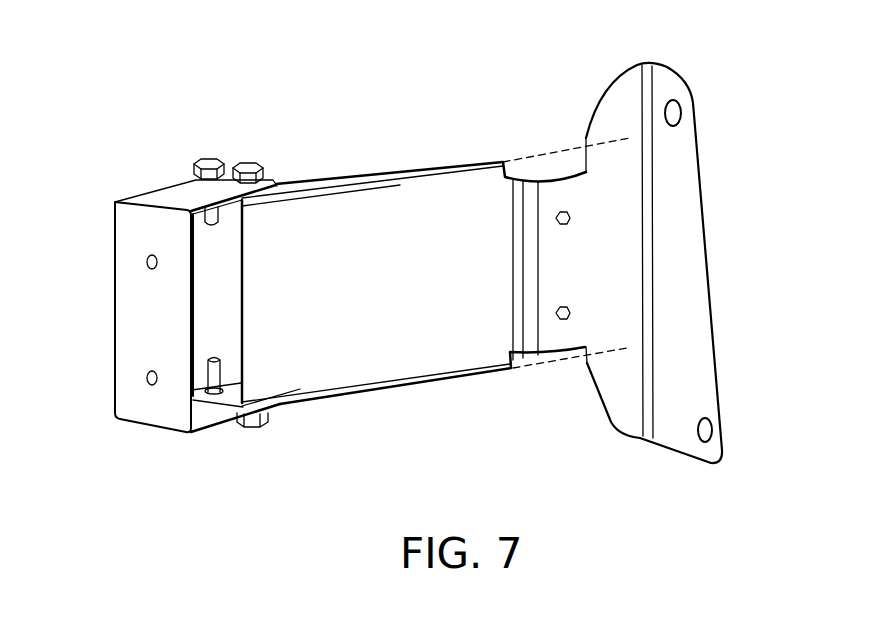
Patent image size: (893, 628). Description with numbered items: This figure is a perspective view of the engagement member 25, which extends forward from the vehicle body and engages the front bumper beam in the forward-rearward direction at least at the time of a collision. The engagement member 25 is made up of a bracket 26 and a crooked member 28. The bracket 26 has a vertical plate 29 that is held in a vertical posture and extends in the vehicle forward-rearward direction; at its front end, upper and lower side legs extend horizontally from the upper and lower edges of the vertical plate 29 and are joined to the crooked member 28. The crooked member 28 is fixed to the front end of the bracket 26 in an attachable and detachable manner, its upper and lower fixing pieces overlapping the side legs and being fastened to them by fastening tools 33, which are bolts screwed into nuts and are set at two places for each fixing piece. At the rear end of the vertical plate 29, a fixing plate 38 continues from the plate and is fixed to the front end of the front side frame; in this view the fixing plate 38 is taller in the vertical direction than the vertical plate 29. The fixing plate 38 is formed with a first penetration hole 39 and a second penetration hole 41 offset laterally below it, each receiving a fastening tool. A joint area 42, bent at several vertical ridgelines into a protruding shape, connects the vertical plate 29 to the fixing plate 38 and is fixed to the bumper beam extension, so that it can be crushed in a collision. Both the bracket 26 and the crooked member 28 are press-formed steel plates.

The engagement member 25 is at (352, 116).
The bracket 26 is at (469, 163).
The crooked member 28 is at (163, 190).
The vertical plate 29 is at (426, 208).
The fastening tools 33 is at (208, 157).
The fixing plate 38 is at (693, 252).
The first penetration hole 39 is at (666, 100).
The second penetration hole 41 is at (708, 442).
The joint area 42 is at (560, 336).